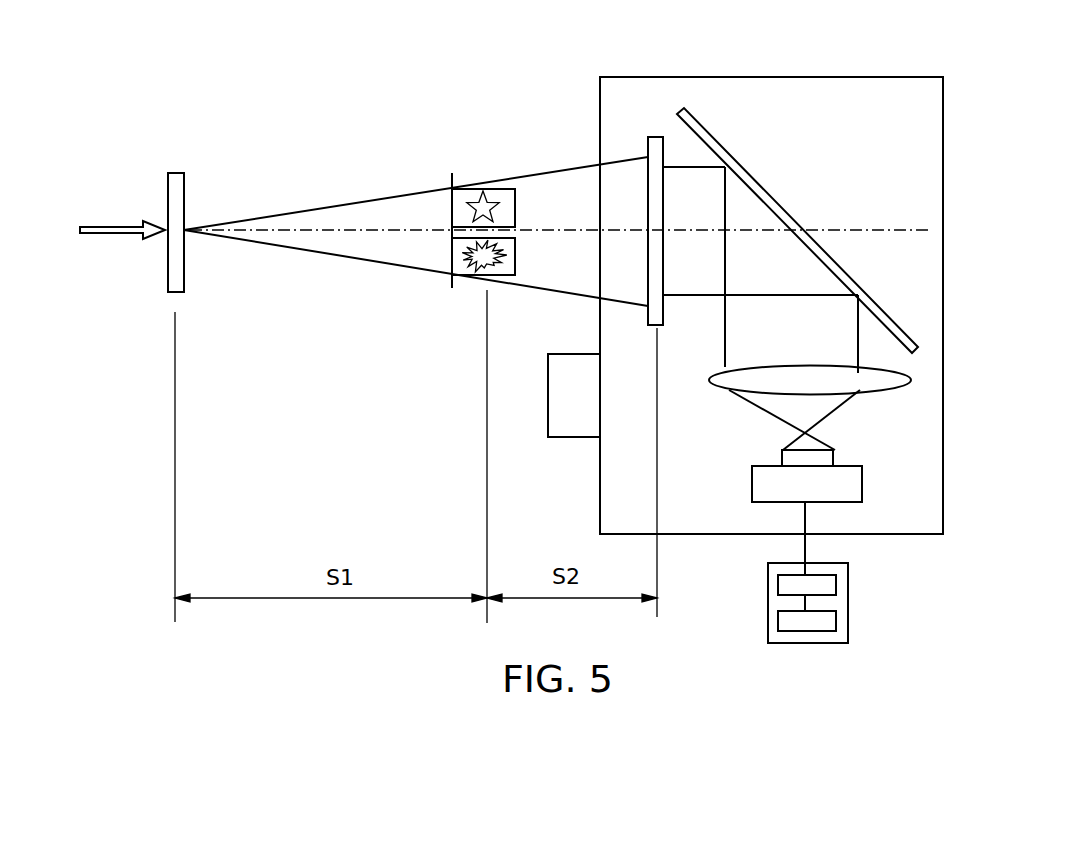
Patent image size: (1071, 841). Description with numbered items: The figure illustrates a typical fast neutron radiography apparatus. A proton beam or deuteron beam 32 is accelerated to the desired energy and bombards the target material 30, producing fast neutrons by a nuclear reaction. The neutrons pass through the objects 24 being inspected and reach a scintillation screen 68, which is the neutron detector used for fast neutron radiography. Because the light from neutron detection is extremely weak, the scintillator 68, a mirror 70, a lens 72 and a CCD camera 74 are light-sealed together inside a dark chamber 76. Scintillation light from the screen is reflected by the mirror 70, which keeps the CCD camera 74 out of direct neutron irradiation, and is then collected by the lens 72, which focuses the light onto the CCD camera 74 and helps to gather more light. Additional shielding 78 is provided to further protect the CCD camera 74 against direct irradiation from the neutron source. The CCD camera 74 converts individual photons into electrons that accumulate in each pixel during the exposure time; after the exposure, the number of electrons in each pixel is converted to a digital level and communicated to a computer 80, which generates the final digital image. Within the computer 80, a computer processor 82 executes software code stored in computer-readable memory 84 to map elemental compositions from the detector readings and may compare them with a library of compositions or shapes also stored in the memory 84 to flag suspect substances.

The objects 24 is at (438, 176).
The target material 30 is at (184, 195).
The proton beam or deuteron beam 32 is at (113, 236).
The scintillation screen 68 is at (645, 137).
The mirror 70 is at (878, 302).
The lens 72 is at (885, 391).
The CCD camera 74 is at (752, 486).
The dark chamber 76 is at (790, 76).
The additional shielding 78 is at (548, 396).
The computer 80 is at (842, 570).
The computer processor 82 is at (836, 585).
The computer-readable memory 84 is at (836, 620).